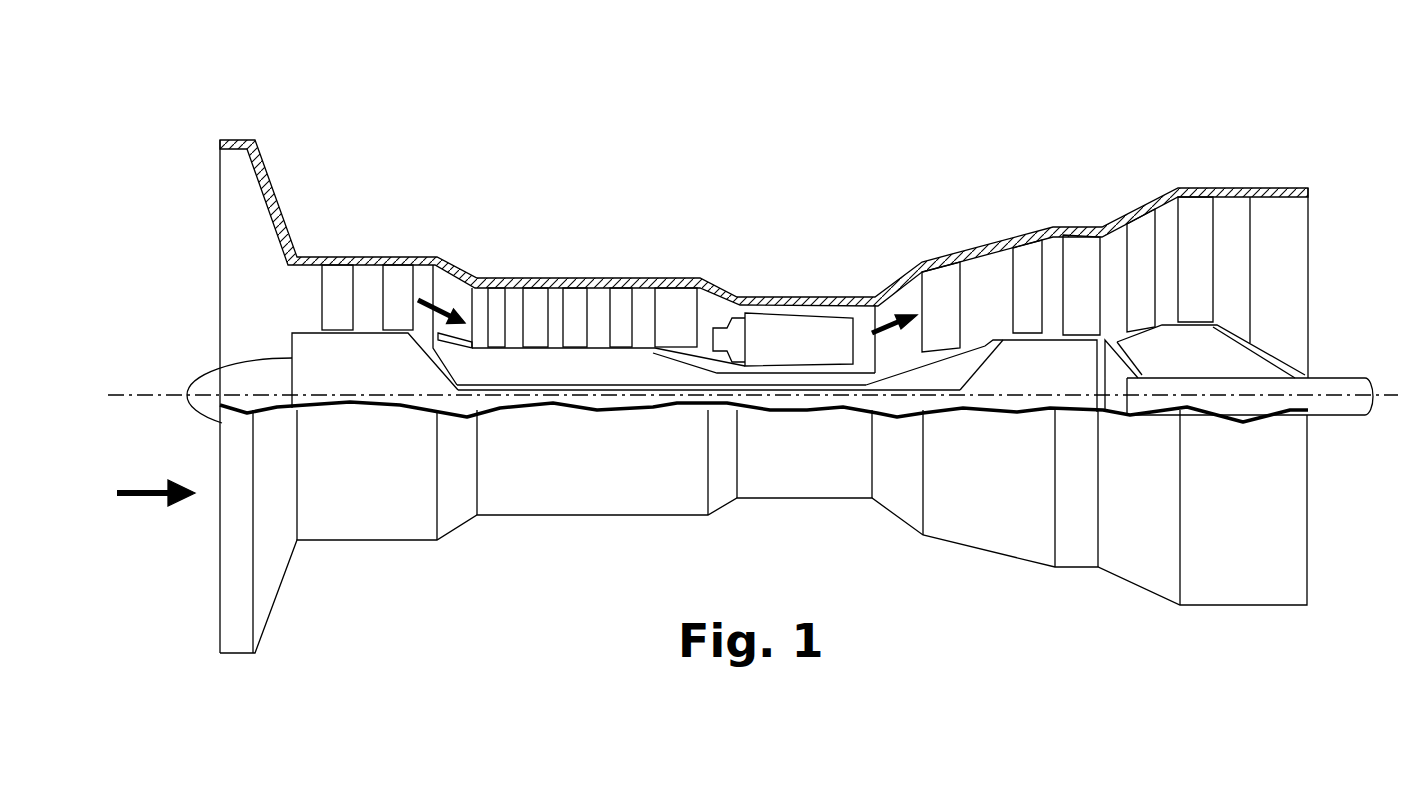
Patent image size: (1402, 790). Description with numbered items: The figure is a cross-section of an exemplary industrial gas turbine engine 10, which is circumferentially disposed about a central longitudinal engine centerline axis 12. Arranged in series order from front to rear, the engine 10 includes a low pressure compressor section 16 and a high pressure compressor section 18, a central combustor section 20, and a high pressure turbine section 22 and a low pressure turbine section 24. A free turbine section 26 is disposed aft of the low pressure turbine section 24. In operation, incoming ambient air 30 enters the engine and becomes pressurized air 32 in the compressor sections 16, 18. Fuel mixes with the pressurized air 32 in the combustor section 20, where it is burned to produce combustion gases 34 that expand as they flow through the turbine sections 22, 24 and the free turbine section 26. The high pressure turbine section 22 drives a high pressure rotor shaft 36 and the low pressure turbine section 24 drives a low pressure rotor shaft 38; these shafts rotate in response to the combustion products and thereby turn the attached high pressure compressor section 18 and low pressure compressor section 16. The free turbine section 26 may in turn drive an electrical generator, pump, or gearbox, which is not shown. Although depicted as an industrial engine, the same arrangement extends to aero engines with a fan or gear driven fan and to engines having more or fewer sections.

The industrial gas turbine engine 10 is at (870, 138).
The engine centerline axis 12 is at (153, 393).
The low pressure compressor section 16 is at (358, 243).
The high pressure compressor section 18 is at (612, 252).
The combustor section 20 is at (775, 325).
The high pressure turbine section 22 is at (982, 218).
The low pressure turbine section 24 is at (1088, 210).
The free turbine section 26 is at (1247, 182).
The incoming ambient air 30 is at (152, 487).
The pressurized air 32 is at (440, 305).
The combustion gases 34 is at (885, 318).
The high pressure rotor shaft 36 is at (676, 364).
The low pressure rotor shaft 38 is at (453, 378).